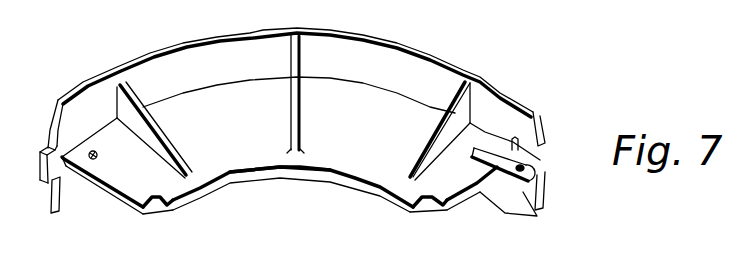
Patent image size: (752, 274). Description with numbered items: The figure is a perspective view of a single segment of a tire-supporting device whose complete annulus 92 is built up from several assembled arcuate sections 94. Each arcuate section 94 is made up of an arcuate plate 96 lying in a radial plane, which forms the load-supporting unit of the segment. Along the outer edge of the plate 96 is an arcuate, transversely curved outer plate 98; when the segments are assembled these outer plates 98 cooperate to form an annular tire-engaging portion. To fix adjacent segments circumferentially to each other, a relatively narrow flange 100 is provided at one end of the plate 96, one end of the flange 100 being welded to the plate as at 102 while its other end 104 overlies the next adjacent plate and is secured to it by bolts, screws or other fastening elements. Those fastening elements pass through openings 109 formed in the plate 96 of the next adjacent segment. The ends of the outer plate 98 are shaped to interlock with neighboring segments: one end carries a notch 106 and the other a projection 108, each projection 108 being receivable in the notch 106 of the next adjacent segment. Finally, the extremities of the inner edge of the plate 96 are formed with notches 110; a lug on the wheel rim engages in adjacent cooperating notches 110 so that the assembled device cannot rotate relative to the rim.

The annulus 92 is at (236, 13).
The arcuate section 94 is at (340, 157).
The arcuate plate 96 is at (380, 163).
The outer plate 98 is at (520, 103).
The flange 100 is at (490, 157).
The weld 102 is at (474, 164).
The other end of flange 104 is at (534, 168).
The notch 106 is at (547, 174).
The projection 108 is at (43, 185).
The opening 109 is at (97, 155).
The notch 110 is at (163, 204).